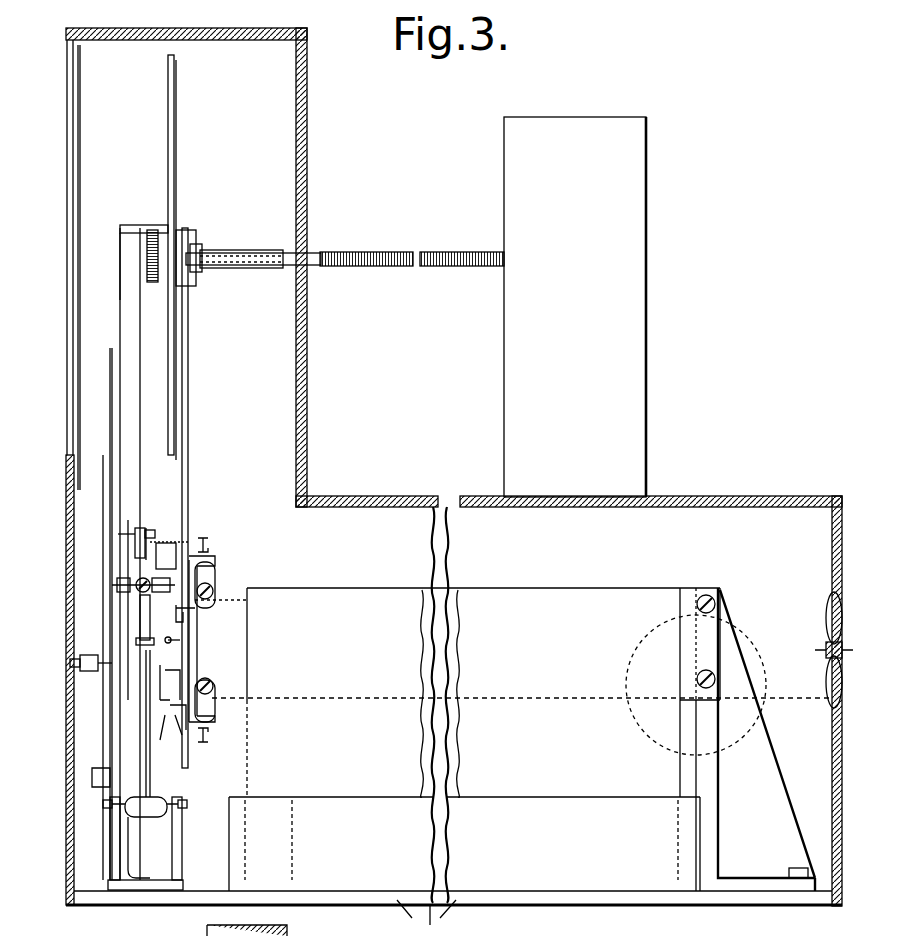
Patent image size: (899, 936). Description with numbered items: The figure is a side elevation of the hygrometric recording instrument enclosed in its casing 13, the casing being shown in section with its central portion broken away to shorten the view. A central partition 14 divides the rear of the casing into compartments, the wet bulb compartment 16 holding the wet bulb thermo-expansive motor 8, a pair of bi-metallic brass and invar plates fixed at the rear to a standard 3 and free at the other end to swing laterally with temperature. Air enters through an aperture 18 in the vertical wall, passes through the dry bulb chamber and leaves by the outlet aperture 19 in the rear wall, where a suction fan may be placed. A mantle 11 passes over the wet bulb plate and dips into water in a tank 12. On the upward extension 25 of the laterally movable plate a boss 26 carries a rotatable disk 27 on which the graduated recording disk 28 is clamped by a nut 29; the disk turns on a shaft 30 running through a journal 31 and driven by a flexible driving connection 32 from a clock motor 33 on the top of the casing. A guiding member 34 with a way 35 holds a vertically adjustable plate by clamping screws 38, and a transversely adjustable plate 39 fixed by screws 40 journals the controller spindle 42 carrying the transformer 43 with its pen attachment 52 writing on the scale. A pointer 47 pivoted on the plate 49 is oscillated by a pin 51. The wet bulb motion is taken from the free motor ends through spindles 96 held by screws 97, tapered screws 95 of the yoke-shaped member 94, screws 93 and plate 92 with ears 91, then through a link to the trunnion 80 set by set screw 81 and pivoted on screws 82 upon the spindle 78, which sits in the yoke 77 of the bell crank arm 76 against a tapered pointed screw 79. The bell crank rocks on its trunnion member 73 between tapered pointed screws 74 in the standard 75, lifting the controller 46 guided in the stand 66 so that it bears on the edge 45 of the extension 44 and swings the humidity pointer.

The standard 3 is at (712, 760).
The wet bulb thermo-expansive motor 8 is at (685, 592).
The mantle 11 is at (505, 622).
The tank 12 is at (695, 835).
The casing 13 is at (718, 499).
The central partition 14 is at (350, 520).
The wet bulb compartment 16 is at (786, 522).
The aperture 18 is at (740, 660).
The outlet aperture 19 is at (832, 594).
The upward extension 25 is at (188, 460).
The boss 26 is at (182, 232).
The rotatable disk 27 is at (176, 185).
The graduated recording disk 28 is at (168, 153).
The nut 29 is at (148, 283).
The shaft 30 is at (310, 258).
The journal 31 is at (240, 250).
The flexible driving connection 32 is at (430, 252).
The motor 33 is at (504, 320).
The guiding member 34 is at (180, 730).
The way 35 is at (172, 640).
The clamping screw 38 is at (175, 676).
The transversely adjustable plate 39 is at (165, 735).
The screw 40 is at (168, 690).
The spindle 42 is at (100, 655).
The transformer 43 is at (120, 522).
The extension 44 is at (120, 598).
The edge 45 is at (103, 752).
The controller 46 is at (128, 625).
The pointer 47 is at (110, 490).
The plate 49 is at (128, 890).
The pin 51 is at (138, 528).
The pen attachment 52 is at (143, 226).
The stand 66 is at (130, 852).
The trunnion member 73 is at (160, 802).
The tapered pointed screw 74 is at (190, 803).
The standard 75 is at (110, 845).
The bell crank lever arm 76 is at (152, 770).
The yoke 77 is at (156, 628).
The spindle 78 is at (150, 612).
The tapered pointed screw 79 is at (152, 530).
The trunnion 80 is at (169, 555).
The set screw 81 is at (140, 582).
The tapered pointed screw 82 is at (117, 584).
The ear 91 is at (146, 528).
The plate 92 is at (212, 600).
The screw 93 is at (240, 608).
The yoke-shaped member 94 is at (193, 558).
The tapered screw 95 is at (208, 545).
The spindle 96 is at (212, 575).
The screw 97 is at (212, 586).